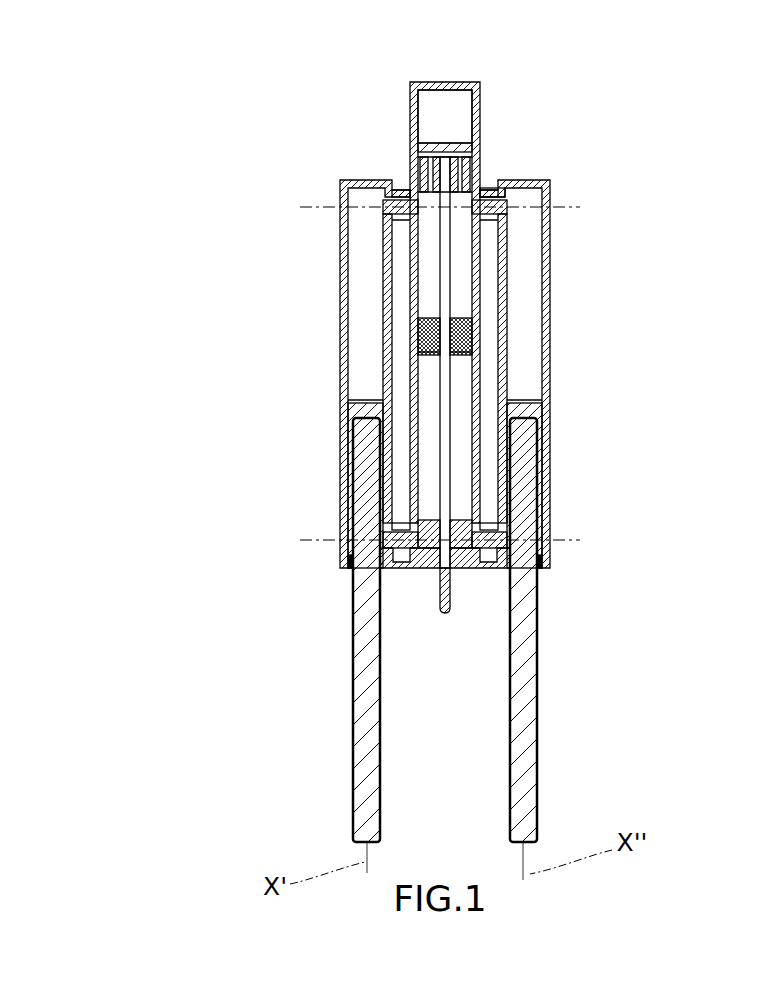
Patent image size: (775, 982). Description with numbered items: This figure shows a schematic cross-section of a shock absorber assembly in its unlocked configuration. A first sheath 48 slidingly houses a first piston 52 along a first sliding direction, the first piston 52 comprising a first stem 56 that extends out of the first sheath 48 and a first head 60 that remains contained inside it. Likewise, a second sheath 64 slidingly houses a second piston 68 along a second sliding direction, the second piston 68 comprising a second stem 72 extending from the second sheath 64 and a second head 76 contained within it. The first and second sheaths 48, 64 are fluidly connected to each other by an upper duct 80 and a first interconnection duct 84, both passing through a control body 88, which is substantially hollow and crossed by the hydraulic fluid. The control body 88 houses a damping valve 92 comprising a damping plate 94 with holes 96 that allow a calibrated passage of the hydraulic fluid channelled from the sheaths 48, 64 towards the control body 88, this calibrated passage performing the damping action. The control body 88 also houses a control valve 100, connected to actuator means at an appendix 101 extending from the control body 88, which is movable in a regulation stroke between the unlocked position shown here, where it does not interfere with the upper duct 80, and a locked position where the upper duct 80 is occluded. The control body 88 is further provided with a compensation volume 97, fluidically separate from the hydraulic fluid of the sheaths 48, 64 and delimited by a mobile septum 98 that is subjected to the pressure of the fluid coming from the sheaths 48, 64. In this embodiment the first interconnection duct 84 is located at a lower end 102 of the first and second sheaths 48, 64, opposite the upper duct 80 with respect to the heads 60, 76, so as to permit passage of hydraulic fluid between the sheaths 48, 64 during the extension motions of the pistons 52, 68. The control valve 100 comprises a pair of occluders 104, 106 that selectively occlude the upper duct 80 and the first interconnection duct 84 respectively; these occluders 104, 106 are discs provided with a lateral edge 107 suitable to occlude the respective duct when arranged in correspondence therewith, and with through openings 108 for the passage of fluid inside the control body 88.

The first sheath 48 is at (340, 305).
The first piston 52 is at (352, 562).
The first stem 56 is at (355, 730).
The first head 60 is at (383, 398).
The second sheath 64 is at (550, 305).
The second piston 68 is at (540, 600).
The second stem 72 is at (510, 590).
The second head 76 is at (507, 395).
The upper duct 80 is at (500, 190).
The first interconnection duct 84 is at (490, 590).
The control body 88 is at (480, 110).
The damping valve 92 is at (420, 330).
The damping plate 94 is at (318, 258).
The holes 96 is at (470, 325).
The compensation volume 97 is at (447, 103).
The mobile septum 98 is at (474, 150).
The control valve 100 is at (450, 430).
The appendix 101 is at (445, 605).
The lower end 102 is at (352, 560).
The occluder 104 is at (410, 180).
The occluder 106 is at (410, 530).
The lateral edge 107 is at (333, 301).
The through openings 108 is at (405, 185).